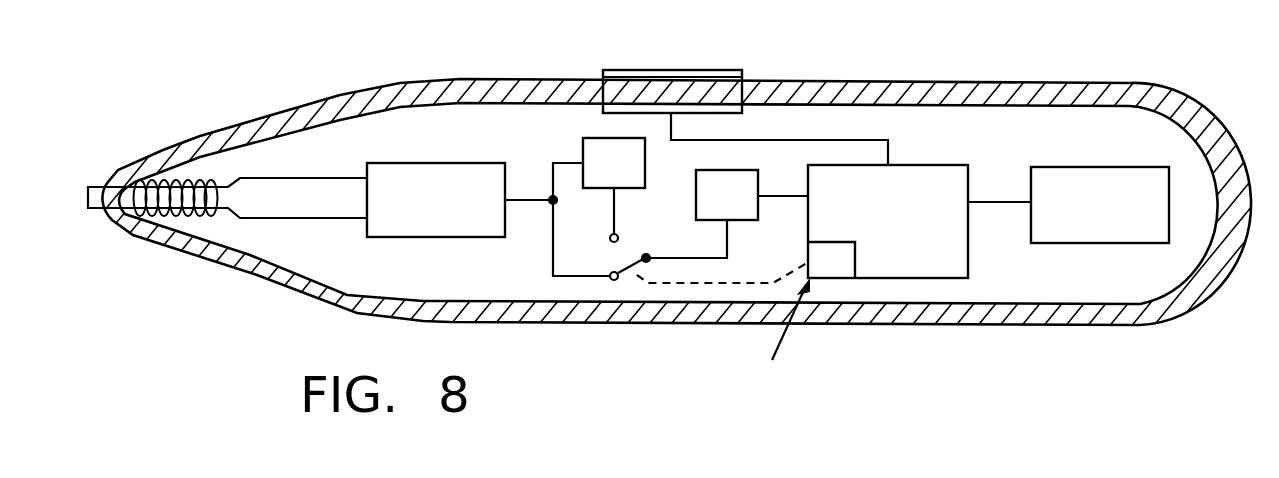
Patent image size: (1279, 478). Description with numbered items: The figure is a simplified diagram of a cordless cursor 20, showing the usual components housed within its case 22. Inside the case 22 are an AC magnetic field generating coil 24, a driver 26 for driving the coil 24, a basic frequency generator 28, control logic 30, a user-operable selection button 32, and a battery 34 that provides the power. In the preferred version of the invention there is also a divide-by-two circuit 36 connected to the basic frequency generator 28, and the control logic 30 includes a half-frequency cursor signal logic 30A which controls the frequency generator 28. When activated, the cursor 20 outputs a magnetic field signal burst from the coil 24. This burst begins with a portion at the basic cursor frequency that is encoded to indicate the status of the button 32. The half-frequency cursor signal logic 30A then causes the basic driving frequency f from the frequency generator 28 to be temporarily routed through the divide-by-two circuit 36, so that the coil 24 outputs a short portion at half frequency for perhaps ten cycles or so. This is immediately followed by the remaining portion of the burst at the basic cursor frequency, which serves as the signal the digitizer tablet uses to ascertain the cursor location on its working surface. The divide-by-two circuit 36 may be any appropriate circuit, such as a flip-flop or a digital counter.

The cursor 20 is at (240, 64).
The case 22 is at (1192, 107).
The AC magnetic field generating coil 24 is at (170, 176).
The driver 26 is at (484, 163).
The basic frequency generator 28 is at (758, 170).
The control logic 30 is at (950, 165).
The half-frequency cursor signal logic 30A is at (845, 267).
The user-operable selection button 32 is at (730, 70).
The battery 34 is at (1077, 167).
The divide-by-two circuit 36 is at (583, 138).